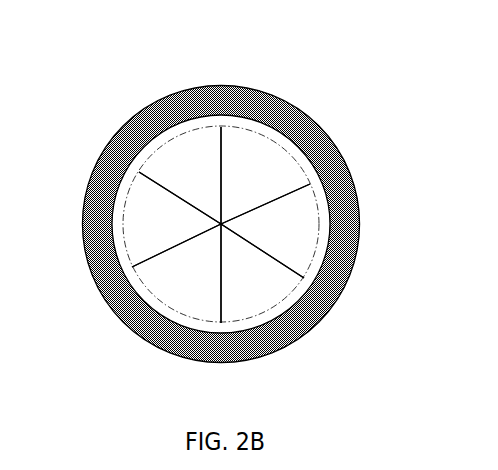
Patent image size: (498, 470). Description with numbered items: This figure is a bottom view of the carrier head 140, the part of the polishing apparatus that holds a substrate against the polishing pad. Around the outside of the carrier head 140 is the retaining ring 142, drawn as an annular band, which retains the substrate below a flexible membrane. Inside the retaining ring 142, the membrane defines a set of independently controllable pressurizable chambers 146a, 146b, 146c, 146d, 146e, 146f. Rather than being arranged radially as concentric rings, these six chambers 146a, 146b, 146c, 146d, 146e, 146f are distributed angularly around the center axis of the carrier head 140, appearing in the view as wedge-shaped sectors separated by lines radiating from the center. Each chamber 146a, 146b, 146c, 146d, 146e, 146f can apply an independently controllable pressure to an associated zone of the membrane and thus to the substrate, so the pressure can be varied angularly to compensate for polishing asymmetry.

The carrier head 140 is at (212, 207).
The retaining ring 142 is at (268, 98).
The chamber 146a is at (279, 168).
The chamber 146b is at (297, 223).
The chamber 146c is at (255, 292).
The chamber 146d is at (182, 292).
The chamber 146e is at (140, 225).
The chamber 146f is at (175, 152).